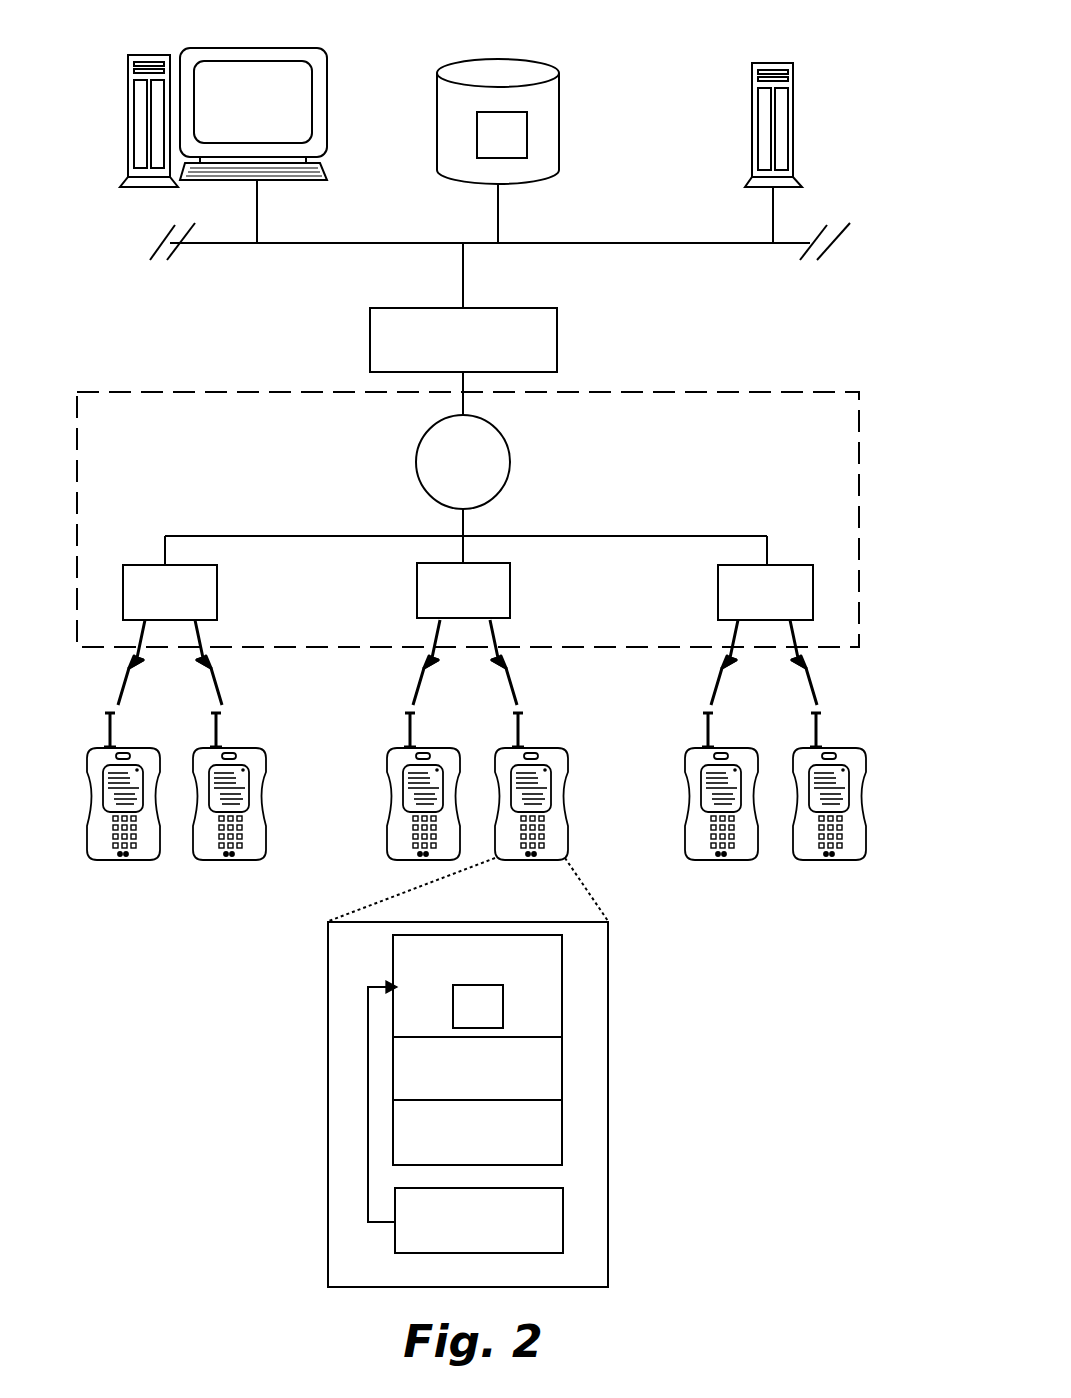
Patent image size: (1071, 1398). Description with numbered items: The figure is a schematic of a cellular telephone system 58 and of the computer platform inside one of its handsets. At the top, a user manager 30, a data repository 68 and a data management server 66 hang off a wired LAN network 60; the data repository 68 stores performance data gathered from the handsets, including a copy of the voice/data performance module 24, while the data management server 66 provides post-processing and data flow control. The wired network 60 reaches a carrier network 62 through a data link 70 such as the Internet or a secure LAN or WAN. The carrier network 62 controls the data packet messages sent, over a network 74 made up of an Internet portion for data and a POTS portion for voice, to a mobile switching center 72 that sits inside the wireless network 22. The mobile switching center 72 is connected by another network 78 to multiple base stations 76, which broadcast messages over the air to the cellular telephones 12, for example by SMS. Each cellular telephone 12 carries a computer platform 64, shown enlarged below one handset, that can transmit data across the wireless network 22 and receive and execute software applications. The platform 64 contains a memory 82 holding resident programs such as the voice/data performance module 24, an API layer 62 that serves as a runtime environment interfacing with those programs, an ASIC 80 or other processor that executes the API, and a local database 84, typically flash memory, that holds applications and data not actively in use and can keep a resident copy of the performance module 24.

The cellular telephone system 58 is at (642, 72).
The user manager 30 is at (327, 112).
The data repository 68 is at (561, 118).
The voice/data performance module 24 is at (490, 570).
The data management server 66 is at (752, 113).
The wired network 60 is at (305, 244).
The data link 70 is at (463, 292).
The carrier network 62 is at (562, 1055).
The wireless network 22 is at (664, 392).
The network 74 is at (462, 380).
The mobile switching center 72 is at (500, 428).
The network 78 is at (463, 525).
The base station 76 is at (217, 593).
The cellular telephone 12 is at (249, 748).
The computer platform 64 is at (328, 1042).
The memory 82 is at (562, 975).
The application-specific integrated circuit 80 is at (562, 1125).
The local database 84 is at (563, 1204).